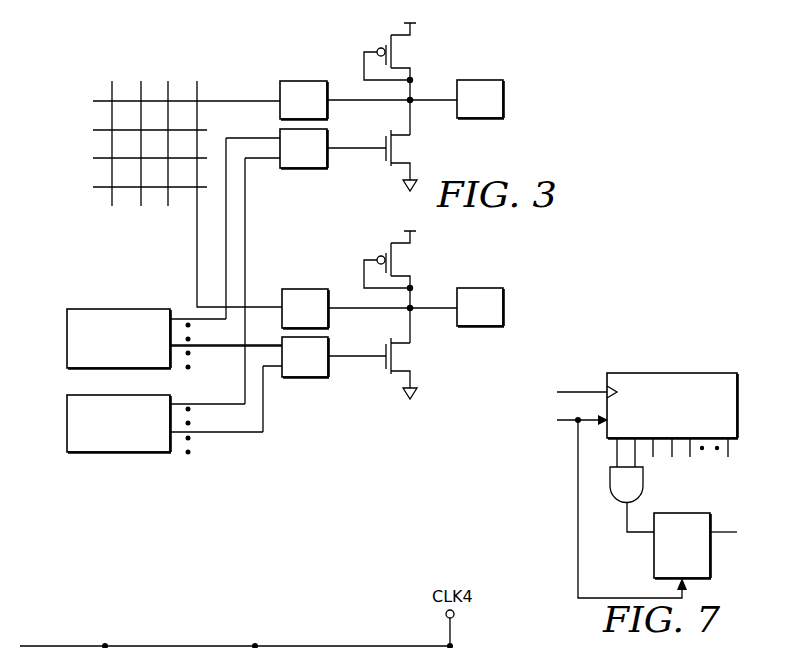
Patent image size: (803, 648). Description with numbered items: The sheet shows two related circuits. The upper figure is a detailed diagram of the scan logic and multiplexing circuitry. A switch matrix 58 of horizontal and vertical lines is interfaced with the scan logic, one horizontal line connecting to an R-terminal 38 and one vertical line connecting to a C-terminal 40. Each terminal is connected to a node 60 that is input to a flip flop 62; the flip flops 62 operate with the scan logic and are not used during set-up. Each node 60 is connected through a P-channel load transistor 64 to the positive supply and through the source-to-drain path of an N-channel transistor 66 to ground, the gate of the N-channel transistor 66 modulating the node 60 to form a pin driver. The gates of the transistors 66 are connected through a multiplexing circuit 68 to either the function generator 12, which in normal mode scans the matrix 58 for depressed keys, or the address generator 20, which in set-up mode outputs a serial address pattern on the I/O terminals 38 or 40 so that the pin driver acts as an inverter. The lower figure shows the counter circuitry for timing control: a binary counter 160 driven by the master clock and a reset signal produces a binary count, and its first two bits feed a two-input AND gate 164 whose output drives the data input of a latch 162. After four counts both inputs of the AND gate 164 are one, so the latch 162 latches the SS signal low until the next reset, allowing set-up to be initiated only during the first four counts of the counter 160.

In FIG. 3, the function generator 12 is at (66, 314).
In FIG. 3, the address generator 20 is at (66, 401).
In FIG. 3, the R-terminal 38 is at (281, 82).
In FIG. 3, the C-terminal 40 is at (283, 290).
In FIG. 3, the switch matrix 58 is at (146, 73).
In FIG. 3, the node 60 is at (412, 99).
In FIG. 3, the flip flop 62 is at (484, 80).
In FIG. 3, the P-channel load transistor 64 is at (406, 33).
In FIG. 3, the N-channel transistor 66 is at (386, 168).
In FIG. 3, the multiplexing circuit 68 is at (300, 169).
In FIG. 7, the binary counter 160 is at (692, 373).
In FIG. 7, the latch 162 is at (644, 486).
In FIG. 7, the two-input AND gate 164 is at (653, 570).